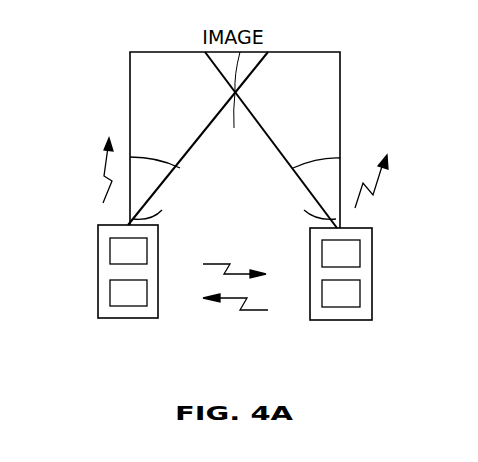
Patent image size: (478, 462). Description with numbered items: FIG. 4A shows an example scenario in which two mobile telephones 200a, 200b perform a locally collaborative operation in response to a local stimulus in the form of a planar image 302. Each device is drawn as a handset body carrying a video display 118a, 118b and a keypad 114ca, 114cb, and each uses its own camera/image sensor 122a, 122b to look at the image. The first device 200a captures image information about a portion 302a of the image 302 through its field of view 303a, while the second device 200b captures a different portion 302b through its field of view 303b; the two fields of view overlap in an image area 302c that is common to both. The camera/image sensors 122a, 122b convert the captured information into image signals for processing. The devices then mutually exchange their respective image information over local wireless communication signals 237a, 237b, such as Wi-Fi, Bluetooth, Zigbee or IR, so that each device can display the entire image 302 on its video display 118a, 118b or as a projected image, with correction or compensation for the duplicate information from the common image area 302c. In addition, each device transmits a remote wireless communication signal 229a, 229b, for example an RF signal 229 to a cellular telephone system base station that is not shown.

The image 302 is at (284, 52).
The portion of the image 302a is at (180, 53).
The portion of the image 302b is at (293, 54).
The image area common to both fields of view 302c is at (241, 101).
The field of view 303a is at (162, 158).
The field of view 303b is at (306, 158).
The camera/image sensor 122a is at (162, 210).
The camera/image sensor 122b is at (304, 210).
The mobile telephone 200a is at (128, 319).
The mobile telephone 200b is at (340, 321).
The video display 118a is at (112, 251).
The video display 118b is at (358, 252).
The keypad 114ca is at (112, 292).
The keypad 114cb is at (358, 292).
The local wireless communication signal 237a is at (222, 262).
The local wireless communication signal 237b is at (242, 312).
The remote wireless communication signal 229a is at (108, 168).
The remote wireless communication signal 229b is at (378, 180).
The remote wireless communication signal 229 is at (463, 418).